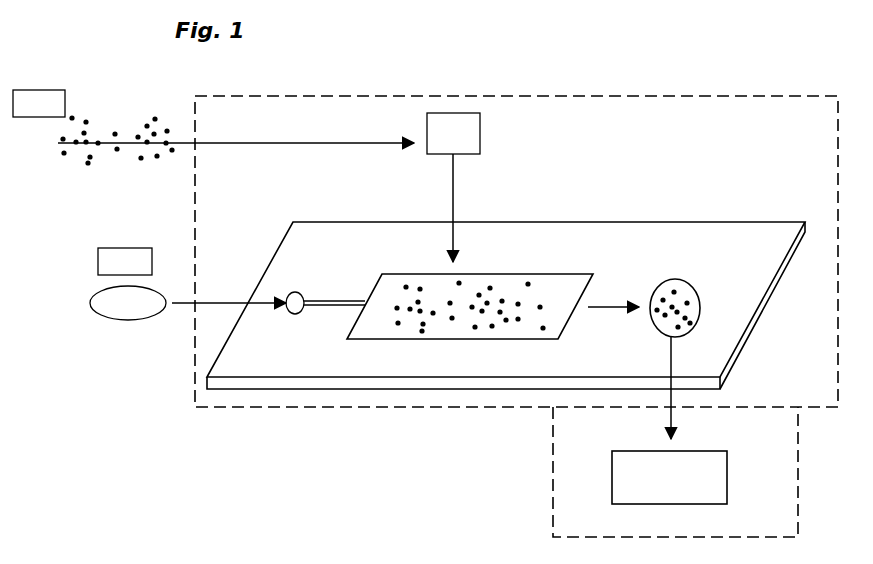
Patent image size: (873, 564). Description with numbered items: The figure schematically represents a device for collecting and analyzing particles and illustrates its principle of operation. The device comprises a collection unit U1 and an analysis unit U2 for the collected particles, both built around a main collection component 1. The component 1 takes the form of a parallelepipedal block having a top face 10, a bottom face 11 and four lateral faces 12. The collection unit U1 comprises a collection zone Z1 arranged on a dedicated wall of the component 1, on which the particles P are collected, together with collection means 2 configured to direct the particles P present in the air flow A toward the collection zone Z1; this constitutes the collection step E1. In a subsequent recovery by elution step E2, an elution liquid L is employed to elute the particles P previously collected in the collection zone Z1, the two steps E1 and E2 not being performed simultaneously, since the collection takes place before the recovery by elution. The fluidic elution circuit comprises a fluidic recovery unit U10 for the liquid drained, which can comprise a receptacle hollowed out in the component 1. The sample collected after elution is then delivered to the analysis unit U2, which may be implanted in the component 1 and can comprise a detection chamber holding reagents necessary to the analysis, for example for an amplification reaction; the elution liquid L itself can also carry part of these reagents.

The collection unit U1 is at (733, 97).
The main collection component 1 is at (710, 205).
The collection means 2 is at (453, 187).
The top face 10 is at (345, 247).
The bottom face 11 is at (745, 369).
The lateral faces 12 is at (357, 383).
The collection zone Z1 is at (547, 283).
The fluidic recovery unit U10 is at (685, 292).
The analysis unit U2 is at (669, 477).
The particles P is at (125, 115).
The air flow A is at (223, 143).
The elution liquid L is at (227, 303).
The collection step E1 is at (39, 103).
The recovery by elution step E2 is at (125, 261).